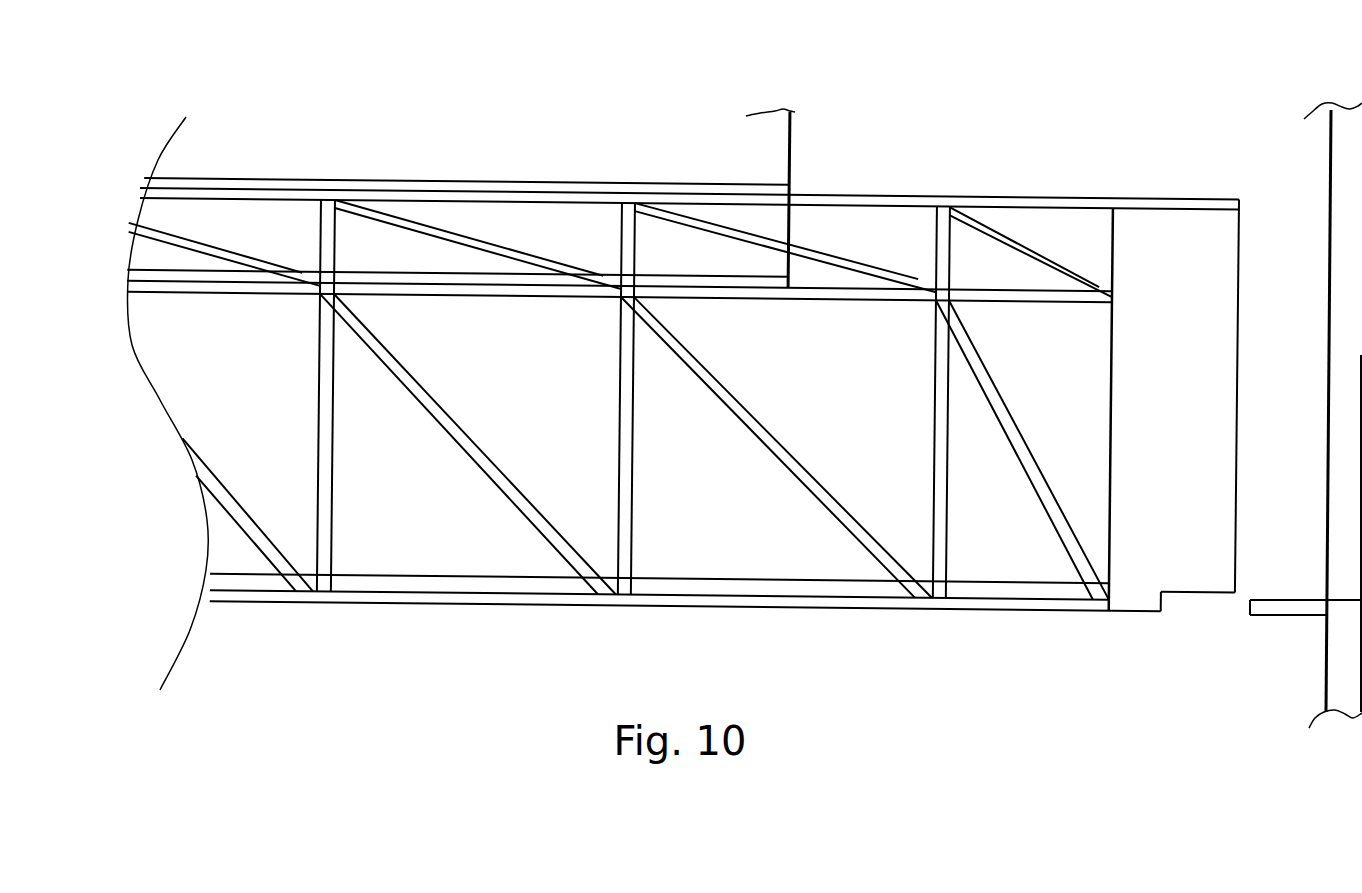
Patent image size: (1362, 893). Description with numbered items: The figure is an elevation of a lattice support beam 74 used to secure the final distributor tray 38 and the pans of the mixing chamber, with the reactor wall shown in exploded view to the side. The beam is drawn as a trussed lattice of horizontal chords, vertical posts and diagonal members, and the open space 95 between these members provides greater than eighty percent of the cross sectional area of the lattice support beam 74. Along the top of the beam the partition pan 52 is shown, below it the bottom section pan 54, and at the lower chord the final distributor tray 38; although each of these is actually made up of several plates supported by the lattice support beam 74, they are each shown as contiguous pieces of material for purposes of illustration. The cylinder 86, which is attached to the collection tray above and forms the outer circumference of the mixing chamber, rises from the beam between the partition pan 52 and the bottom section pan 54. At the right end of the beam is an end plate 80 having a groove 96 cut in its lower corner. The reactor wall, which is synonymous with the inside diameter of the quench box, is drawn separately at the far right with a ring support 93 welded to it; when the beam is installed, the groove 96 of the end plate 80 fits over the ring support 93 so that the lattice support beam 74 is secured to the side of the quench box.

The final distributor tray 38 is at (225, 582).
The partition pan 52 is at (153, 182).
The bottom section pan 54 is at (150, 276).
The lattice support beam 74 is at (302, 234).
The end plate 80 is at (1182, 268).
The cylinder 86 is at (793, 148).
The ring support 93 is at (1287, 617).
The open space 95 is at (815, 380).
The groove 96 is at (1198, 602).